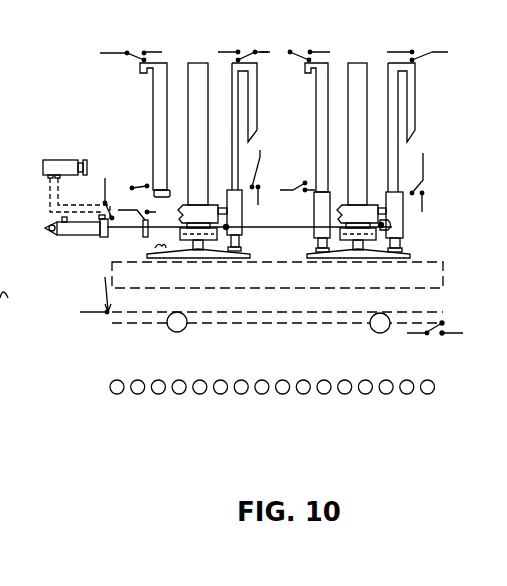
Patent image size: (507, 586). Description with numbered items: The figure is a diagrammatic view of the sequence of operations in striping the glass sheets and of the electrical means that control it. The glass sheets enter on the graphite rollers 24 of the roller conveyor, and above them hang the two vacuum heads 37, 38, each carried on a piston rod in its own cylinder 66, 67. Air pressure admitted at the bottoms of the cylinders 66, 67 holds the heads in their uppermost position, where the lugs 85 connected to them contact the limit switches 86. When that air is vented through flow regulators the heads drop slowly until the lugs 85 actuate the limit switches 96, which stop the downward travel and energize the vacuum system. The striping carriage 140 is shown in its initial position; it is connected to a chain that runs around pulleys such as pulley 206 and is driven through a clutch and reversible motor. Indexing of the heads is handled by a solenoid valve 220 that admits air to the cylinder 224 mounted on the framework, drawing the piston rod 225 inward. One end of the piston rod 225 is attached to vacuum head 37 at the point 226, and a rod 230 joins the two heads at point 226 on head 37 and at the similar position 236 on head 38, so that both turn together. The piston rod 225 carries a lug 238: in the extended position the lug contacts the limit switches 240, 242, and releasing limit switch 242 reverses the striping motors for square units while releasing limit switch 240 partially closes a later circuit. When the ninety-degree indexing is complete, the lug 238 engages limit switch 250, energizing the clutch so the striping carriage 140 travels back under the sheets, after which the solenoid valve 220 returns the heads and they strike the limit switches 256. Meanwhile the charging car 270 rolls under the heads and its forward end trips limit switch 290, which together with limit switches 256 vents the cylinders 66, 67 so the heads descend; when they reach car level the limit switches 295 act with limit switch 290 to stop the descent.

The graphite rollers 24 is at (158, 394).
The vacuum head 37 is at (243, 252).
The vacuum head 38 is at (407, 253).
The cylinder 66 is at (208, 103).
The cylinder 67 is at (365, 103).
The lugs 85 is at (148, 70).
The limit switches 86 is at (145, 51).
The limit switches 96 is at (132, 186).
The striping carriage 140 is at (445, 281).
The pulley 206 is at (14, 305).
The solenoid valve 220 is at (43, 167).
The cylinder 224 is at (72, 235).
The piston rod 225 is at (108, 237).
The connection point on vacuum head 37 226 is at (226, 229).
The rod 230 is at (273, 226).
The connection point on vacuum head 38 236 is at (390, 223).
The lug 238 is at (155, 220).
The limit switch 240 is at (143, 214).
The limit switch 242 is at (145, 238).
The limit switch 250 is at (104, 197).
The limit switches 256 is at (237, 51).
The charging car 270 is at (446, 313).
The limit switch 290 is at (110, 310).
The limit switches 295 is at (260, 157).